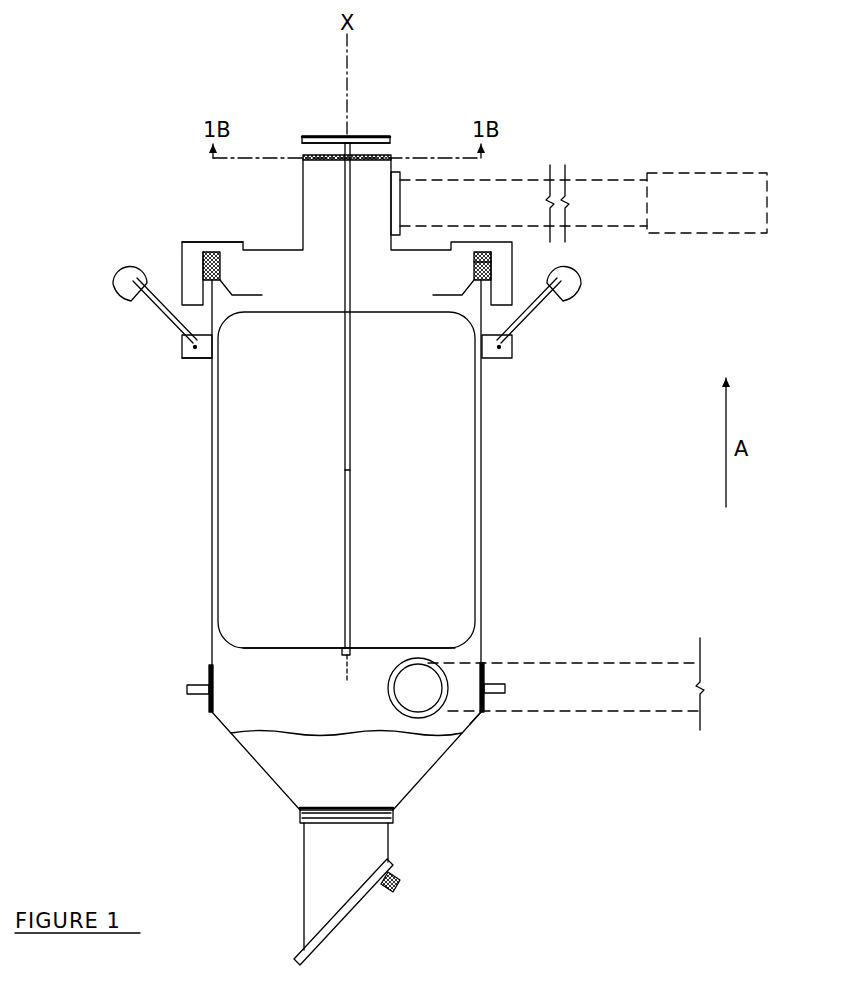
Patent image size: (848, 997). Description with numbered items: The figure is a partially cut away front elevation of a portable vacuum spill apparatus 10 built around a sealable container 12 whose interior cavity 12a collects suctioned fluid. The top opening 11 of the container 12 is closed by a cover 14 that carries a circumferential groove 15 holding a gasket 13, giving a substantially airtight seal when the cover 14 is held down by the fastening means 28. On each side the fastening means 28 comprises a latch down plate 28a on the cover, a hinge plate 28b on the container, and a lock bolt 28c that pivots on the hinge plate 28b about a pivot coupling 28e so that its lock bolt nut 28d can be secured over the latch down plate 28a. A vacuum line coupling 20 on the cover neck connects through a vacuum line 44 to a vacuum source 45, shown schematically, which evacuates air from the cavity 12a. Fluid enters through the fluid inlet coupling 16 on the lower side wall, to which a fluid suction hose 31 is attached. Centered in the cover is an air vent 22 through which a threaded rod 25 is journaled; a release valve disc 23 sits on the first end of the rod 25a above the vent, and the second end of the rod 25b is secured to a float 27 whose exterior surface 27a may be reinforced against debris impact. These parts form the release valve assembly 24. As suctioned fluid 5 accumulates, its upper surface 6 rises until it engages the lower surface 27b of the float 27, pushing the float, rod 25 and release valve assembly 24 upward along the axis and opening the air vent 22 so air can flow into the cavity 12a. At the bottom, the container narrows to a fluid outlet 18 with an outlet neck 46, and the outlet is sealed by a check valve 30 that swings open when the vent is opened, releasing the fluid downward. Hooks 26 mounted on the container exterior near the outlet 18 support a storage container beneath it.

The fluid 5 is at (360, 785).
The upper surface of the fluid 6 is at (295, 732).
The vacuum spill apparatus 10 is at (530, 122).
The opening 11 is at (280, 268).
The sealable container 12 is at (212, 484).
The cavity 12a is at (447, 718).
The gasket 13 is at (225, 284).
The cover 14 is at (437, 247).
The groove 15 is at (474, 264).
The fluid inlet coupling 16 is at (388, 699).
The fluid outlet 18 is at (304, 842).
The vacuum line coupling 20 is at (400, 204).
The air vent 22 is at (384, 157).
The release valve disc 23 is at (313, 137).
The release valve assembly 24 is at (305, 113).
The threaded rod 25 is at (343, 276).
The first end of the rod 25a is at (345, 148).
The second end of the rod 25b is at (343, 482).
The hooks 26 is at (187, 684).
The float 27 is at (312, 627).
The exterior surface of the float 27a is at (421, 491).
The lower surface of the float 27b is at (344, 677).
The fastening means 28 is at (312, 296).
The latch down plate 28a is at (186, 242).
The hinge plate 28b is at (183, 358).
The lock bolt 28c is at (160, 315).
The lock bolt nut 28d is at (128, 280).
The pivot coupling 28e is at (193, 347).
The check valve 30 is at (362, 920).
The fluid suction hose 31 is at (622, 680).
The vacuum line 44 is at (592, 217).
The vacuum source 45 is at (718, 214).
The outlet neck 46 is at (298, 816).